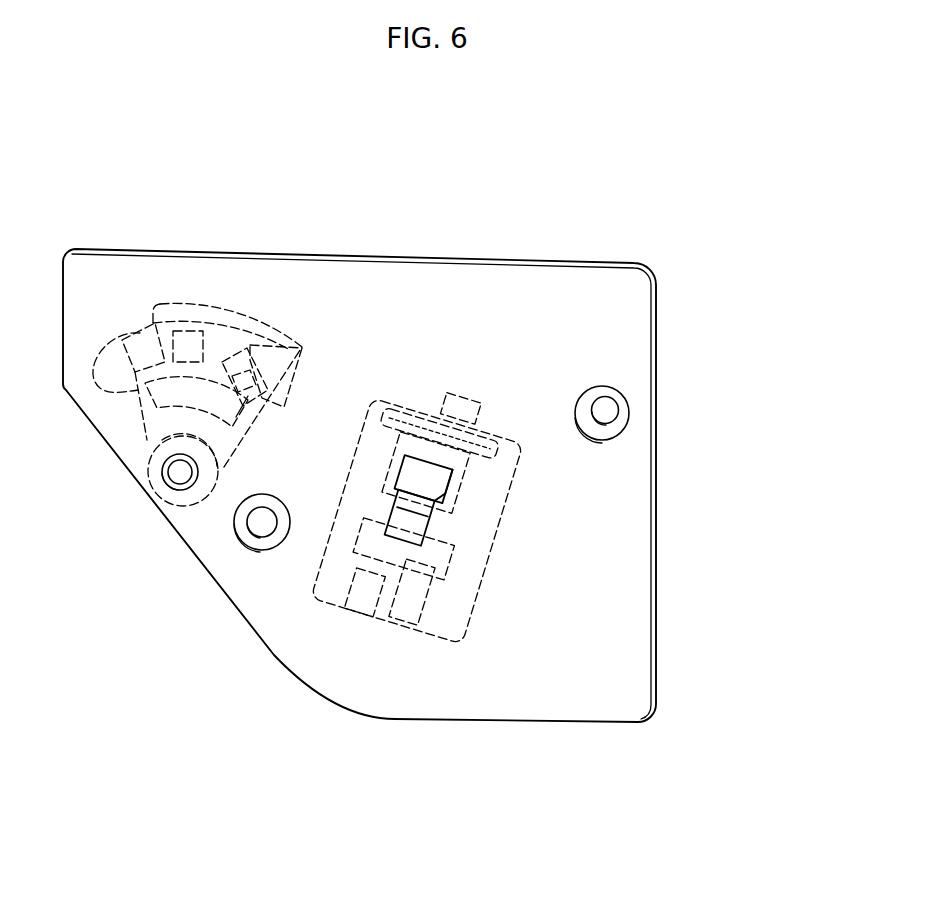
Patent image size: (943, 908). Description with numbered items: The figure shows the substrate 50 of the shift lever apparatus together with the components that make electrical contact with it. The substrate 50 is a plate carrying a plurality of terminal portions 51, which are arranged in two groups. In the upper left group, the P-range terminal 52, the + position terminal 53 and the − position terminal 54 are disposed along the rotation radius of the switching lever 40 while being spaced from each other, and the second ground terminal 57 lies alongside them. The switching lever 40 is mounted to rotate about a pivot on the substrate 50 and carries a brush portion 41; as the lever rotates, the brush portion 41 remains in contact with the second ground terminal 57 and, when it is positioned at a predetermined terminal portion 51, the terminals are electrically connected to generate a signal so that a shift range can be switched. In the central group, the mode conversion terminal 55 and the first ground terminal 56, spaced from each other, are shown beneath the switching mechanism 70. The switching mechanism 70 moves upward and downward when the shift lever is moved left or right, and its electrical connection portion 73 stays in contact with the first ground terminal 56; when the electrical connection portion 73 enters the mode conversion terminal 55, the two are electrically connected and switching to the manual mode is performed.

The switching lever 40 is at (197, 420).
The brush portion 41 is at (213, 460).
The substrate 50 is at (608, 367).
The terminal portions 51 is at (298, 143).
The P-range terminal 52 is at (258, 370).
The + position terminal 53 is at (190, 352).
The − position terminal 54 is at (140, 352).
The mode conversion terminal 55 is at (362, 600).
The first ground terminal 56 is at (412, 608).
The second ground terminal 57 is at (205, 395).
The switching mechanism 70 is at (433, 483).
The electrical connection portion 73 is at (437, 558).